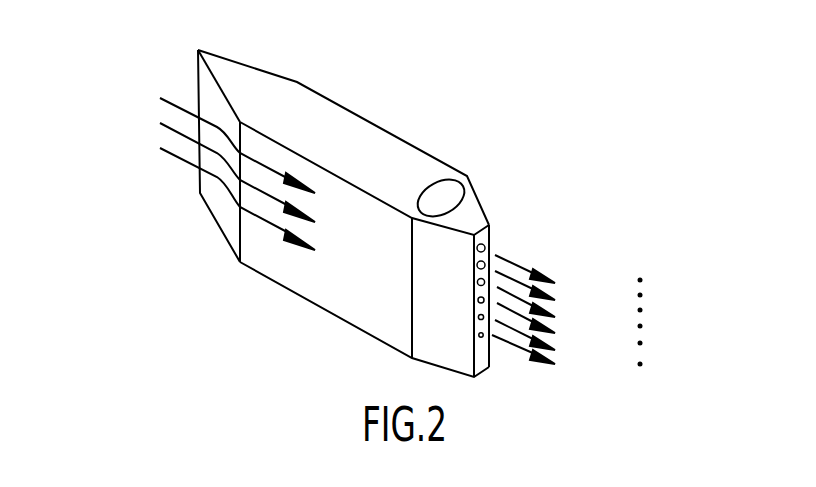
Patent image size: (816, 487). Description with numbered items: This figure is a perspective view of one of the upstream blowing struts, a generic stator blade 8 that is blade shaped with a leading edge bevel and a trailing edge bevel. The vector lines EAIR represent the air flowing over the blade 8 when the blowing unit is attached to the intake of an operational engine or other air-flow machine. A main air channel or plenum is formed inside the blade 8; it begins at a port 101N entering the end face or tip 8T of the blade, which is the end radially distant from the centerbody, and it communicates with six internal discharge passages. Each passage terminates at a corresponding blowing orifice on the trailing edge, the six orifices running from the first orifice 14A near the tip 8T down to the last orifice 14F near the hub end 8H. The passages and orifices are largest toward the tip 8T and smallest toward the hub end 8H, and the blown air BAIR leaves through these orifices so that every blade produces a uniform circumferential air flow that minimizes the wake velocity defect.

The stator blade 8 is at (523, 170).
The end face (tip) of the blade 8T is at (292, 117).
The hub end of the blade 8H is at (302, 298).
The port 101N is at (455, 177).
The discharge orifice 14A is at (492, 247).
The discharge orifice 14F is at (492, 335).
The air flow vector lines EAIR is at (160, 75).
The blowing air flow BAIR is at (563, 273).